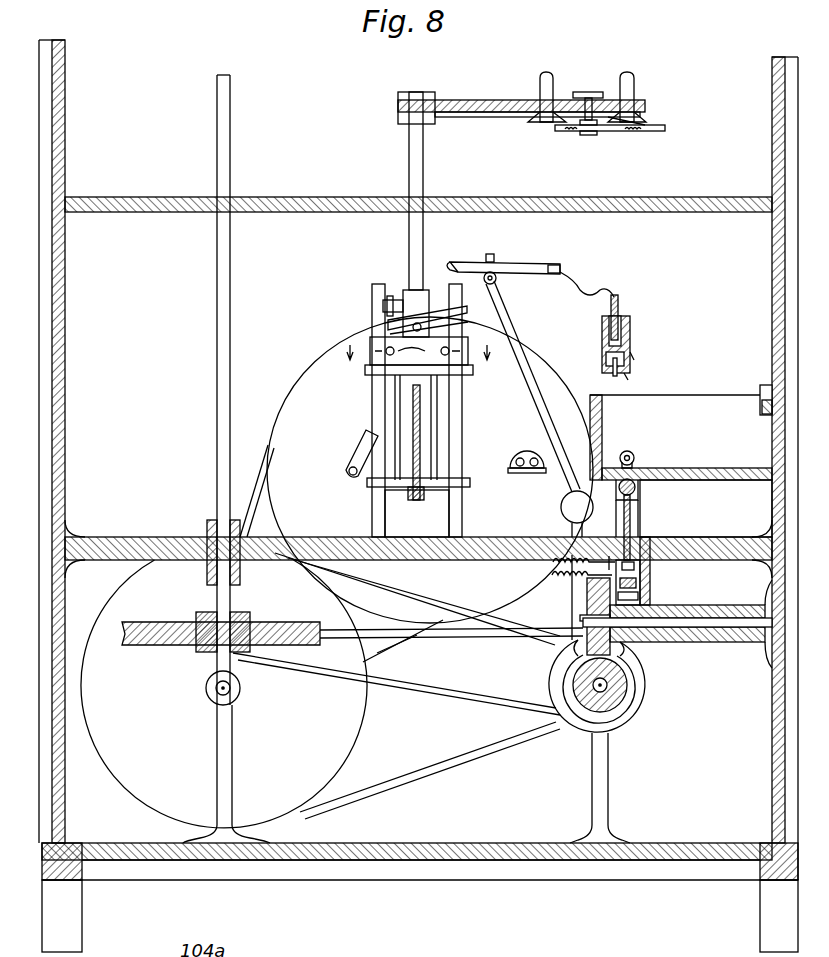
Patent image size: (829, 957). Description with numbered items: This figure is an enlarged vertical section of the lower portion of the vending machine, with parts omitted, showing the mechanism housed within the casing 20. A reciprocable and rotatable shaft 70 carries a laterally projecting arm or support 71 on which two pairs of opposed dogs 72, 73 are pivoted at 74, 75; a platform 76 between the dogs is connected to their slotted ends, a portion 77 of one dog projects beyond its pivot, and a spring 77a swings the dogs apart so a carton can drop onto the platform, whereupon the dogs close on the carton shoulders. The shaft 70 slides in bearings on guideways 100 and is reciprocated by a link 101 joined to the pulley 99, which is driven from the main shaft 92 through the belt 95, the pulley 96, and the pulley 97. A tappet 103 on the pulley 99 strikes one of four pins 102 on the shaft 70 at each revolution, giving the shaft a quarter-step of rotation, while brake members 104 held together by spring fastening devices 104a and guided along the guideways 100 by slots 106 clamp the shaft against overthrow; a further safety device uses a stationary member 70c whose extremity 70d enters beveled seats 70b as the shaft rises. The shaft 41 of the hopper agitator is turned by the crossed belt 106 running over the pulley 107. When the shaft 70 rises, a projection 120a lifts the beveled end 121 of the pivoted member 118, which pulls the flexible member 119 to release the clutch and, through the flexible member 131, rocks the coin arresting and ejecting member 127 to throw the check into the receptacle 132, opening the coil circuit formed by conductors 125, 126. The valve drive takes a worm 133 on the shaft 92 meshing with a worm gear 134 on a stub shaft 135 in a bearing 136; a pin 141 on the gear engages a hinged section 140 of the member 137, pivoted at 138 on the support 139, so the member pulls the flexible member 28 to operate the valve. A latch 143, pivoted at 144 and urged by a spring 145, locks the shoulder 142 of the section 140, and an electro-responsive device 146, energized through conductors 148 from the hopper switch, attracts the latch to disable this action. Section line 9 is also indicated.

The casing 20 is at (771, 150).
The shaft 41 is at (232, 350).
The reciprocable and rotatable shaft 70 is at (409, 152).
The arm or support 71 is at (488, 100).
The dog 72 is at (552, 72).
The dog 73 is at (640, 72).
The pivot 74 is at (540, 128).
The pivot 75 is at (645, 123).
The platform 76 is at (590, 92).
The portion of dog 77 is at (668, 128).
The spring 77a is at (618, 131).
The section line 9 is at (418, 363).
The flexible member 28 is at (630, 448).
The recesses or seats 70b is at (408, 500).
The stationary member 70c is at (425, 428).
The extremity 70d is at (440, 495).
The shaft 92 is at (612, 686).
The belt 95 is at (530, 645).
The pulley 96 is at (352, 745).
The pulley 97 is at (262, 462).
The pulley 99 is at (303, 378).
The guideways 100 is at (372, 517).
The link 101 is at (358, 445).
The pins or arms 102 is at (440, 312).
The tappet or projection 103 is at (542, 455).
The brake members 104 is at (490, 318).
The spring fastening devices 104a is at (419, 356).
The crossed belt 106 is at (445, 638).
The pulley 107 is at (300, 622).
The pivotally mounted member 118 is at (538, 262).
The flexible member 119 is at (530, 372).
The projection 120a is at (398, 300).
The beveled extremity 121 is at (446, 262).
The conductor 125 is at (630, 350).
The conductor 126 is at (630, 372).
The coin arresting and ejecting member 127 is at (622, 300).
The flexible member 131 is at (600, 282).
The check receiving receptacle 132 is at (681, 432).
The worm 133 is at (628, 700).
The worm gear 134 is at (615, 648).
The stub shaft 135 is at (730, 600).
The bearing 136 is at (718, 642).
The member 137 is at (650, 521).
The pivot 138 is at (640, 566).
The support 139 is at (640, 582).
The section 140 is at (640, 598).
The pin or projection 141 is at (575, 614).
The shoulder 142 is at (673, 571).
The latch 143 is at (632, 506).
The pivot 144 is at (636, 490).
The spring 145 is at (568, 487).
The electro-responsive device 146 is at (560, 578).
The conductors 148 is at (550, 562).